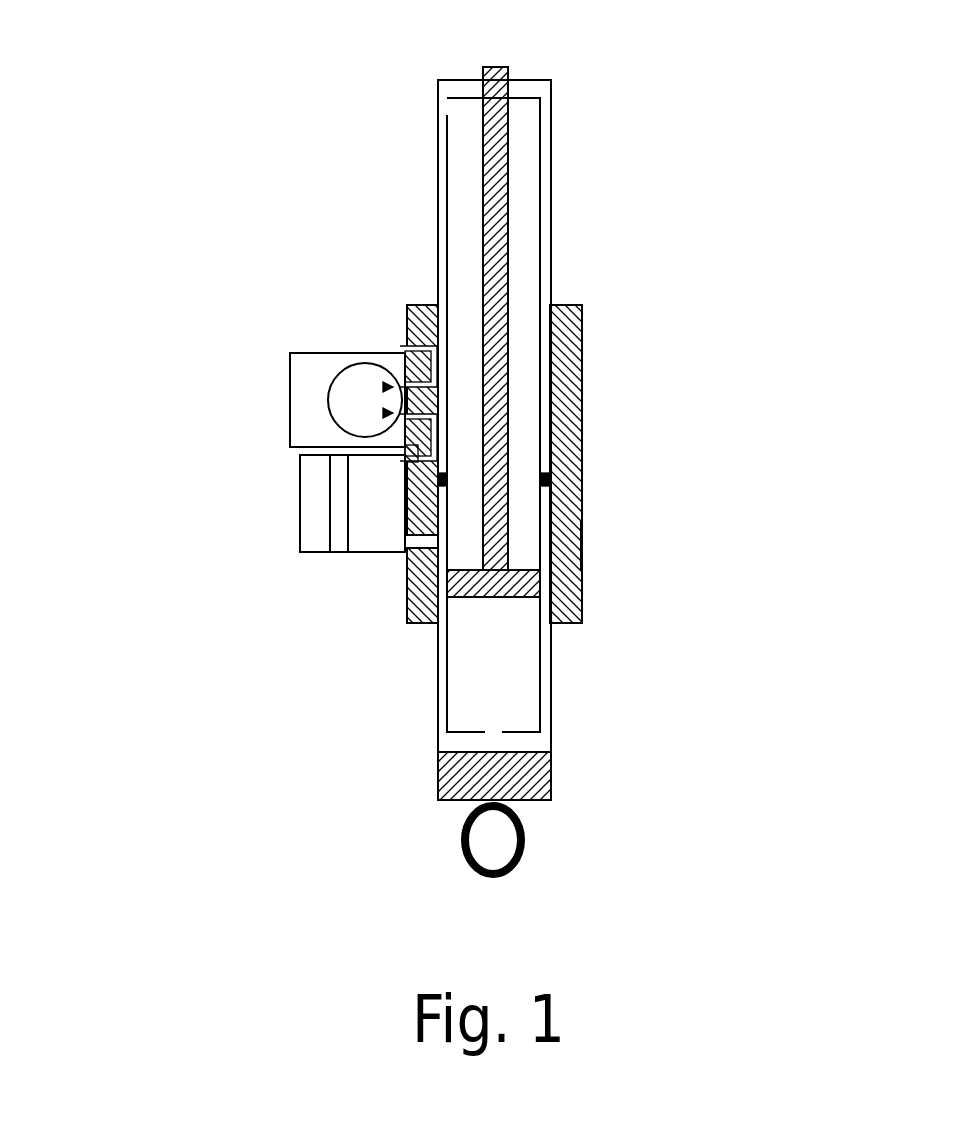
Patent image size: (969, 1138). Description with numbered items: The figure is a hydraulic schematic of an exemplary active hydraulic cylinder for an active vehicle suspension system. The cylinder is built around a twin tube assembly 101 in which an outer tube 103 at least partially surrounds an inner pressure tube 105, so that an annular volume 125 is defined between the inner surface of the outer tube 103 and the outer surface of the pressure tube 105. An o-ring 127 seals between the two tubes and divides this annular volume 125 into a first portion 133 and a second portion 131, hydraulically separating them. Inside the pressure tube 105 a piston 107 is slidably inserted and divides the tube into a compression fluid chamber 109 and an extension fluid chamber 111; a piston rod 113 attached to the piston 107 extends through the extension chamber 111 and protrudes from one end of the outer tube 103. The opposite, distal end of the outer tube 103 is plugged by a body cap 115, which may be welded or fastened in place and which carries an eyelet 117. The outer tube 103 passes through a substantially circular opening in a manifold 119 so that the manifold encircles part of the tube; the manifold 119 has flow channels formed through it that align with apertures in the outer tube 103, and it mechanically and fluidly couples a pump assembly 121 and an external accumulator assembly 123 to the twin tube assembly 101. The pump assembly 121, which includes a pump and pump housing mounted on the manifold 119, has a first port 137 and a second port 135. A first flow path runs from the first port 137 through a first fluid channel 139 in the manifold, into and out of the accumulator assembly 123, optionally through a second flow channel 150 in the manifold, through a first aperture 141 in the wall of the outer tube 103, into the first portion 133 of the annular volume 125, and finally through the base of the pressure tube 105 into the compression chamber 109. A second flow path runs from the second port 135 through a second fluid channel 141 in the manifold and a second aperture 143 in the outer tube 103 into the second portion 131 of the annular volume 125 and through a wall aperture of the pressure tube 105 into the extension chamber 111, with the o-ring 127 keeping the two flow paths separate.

The twin tube assembly 101 is at (565, 112).
The outer tube 103 is at (552, 207).
The pressure tube 105 is at (540, 247).
The piston 107 is at (530, 597).
The compression fluid chamber 109 is at (472, 686).
The extension fluid chamber 111 is at (465, 218).
The piston rod 113 is at (493, 175).
The body cap 115 is at (552, 778).
The eyelet 117 is at (462, 847).
The manifold 119 is at (580, 480).
The pump assembly 121 is at (290, 382).
The accumulator assembly 123 is at (300, 503).
The annular volume 125 is at (442, 670).
The o-ring 127 is at (580, 545).
The second portion of annular volume 131 is at (550, 285).
The first portion of annular volume 133 is at (440, 630).
The second port 135 is at (388, 387).
The first port 137 is at (388, 413).
The first fluid channel 139 is at (427, 443).
The first aperture 141 is at (410, 348).
The second aperture 143 is at (408, 354).
The second flow channel 150 is at (417, 548).